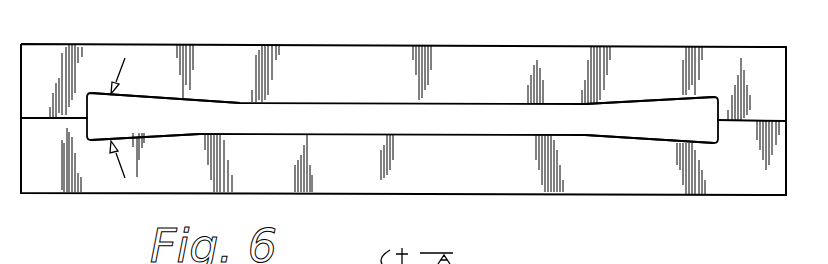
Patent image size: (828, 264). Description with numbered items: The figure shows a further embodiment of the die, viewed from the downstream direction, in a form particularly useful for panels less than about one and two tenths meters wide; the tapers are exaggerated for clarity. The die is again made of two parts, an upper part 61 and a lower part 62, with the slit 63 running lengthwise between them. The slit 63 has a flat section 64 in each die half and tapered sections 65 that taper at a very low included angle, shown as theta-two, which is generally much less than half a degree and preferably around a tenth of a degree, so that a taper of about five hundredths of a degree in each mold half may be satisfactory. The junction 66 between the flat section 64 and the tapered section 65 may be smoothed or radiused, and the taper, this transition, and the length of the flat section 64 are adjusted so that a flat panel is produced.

The die part 61 is at (761, 70).
The die part 62 is at (763, 175).
The slit 63 is at (332, 122).
The flat section 64 is at (506, 104).
The tapered section 65 is at (668, 100).
The junction 66 is at (613, 104).